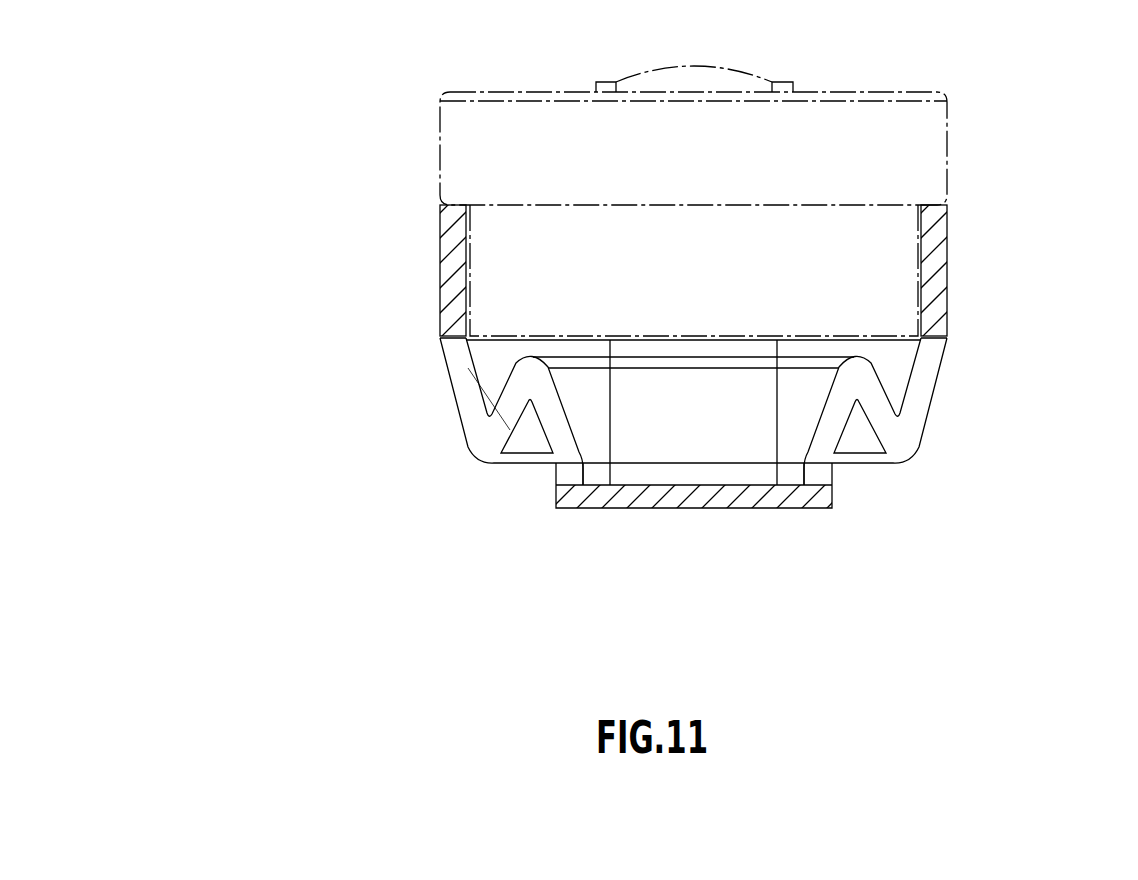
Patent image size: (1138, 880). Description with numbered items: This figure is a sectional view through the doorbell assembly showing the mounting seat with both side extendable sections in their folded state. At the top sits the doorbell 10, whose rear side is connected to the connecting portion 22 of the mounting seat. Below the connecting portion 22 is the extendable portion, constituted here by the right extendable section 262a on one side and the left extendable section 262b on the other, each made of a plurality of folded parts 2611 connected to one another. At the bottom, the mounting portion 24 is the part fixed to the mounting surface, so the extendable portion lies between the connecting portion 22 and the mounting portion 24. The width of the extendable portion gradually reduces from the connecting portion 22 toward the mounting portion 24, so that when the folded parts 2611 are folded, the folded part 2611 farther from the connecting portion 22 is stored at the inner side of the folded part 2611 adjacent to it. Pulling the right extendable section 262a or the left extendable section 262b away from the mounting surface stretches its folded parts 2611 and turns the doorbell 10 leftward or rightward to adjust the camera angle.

The doorbell 10 is at (935, 157).
The connecting portion 22 is at (933, 258).
The mounting portion 24 is at (822, 502).
The right extendable section 262a is at (928, 388).
The left extendable section 262b is at (400, 479).
The folded parts 2611 is at (463, 395).